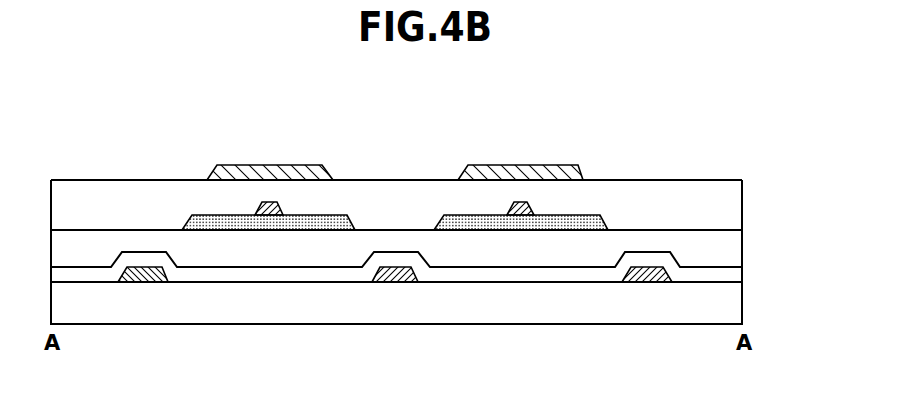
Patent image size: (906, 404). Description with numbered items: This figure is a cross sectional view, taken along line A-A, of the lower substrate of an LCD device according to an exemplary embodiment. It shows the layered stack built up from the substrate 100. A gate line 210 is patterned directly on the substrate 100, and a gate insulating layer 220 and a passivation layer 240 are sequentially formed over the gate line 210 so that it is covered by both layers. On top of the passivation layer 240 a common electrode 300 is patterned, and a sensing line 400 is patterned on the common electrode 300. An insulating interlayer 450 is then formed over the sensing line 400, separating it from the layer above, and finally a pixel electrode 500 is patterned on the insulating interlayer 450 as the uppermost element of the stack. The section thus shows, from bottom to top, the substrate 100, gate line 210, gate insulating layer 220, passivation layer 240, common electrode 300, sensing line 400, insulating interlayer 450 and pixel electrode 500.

The substrate 100 is at (742, 303).
The gate line 210 is at (648, 283).
The gate insulating layer 220 is at (742, 277).
The passivation layer 240 is at (742, 250).
The common electrode 300 is at (313, 224).
The sensing line 400 is at (263, 204).
The insulating interlayer 450 is at (742, 205).
The pixel electrode 500 is at (520, 180).